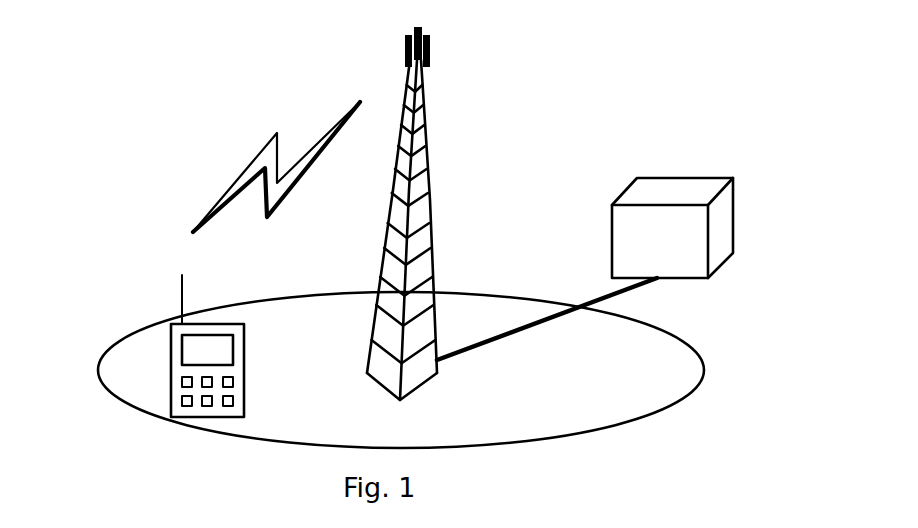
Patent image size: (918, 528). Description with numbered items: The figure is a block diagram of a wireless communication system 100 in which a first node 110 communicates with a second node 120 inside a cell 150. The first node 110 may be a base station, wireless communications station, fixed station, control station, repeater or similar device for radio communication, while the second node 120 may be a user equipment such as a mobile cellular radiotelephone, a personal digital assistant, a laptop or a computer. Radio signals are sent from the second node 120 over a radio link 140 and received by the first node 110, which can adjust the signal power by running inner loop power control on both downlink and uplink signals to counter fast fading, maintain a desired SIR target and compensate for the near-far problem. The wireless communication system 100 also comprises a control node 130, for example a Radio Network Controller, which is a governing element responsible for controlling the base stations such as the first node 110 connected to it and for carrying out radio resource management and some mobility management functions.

The wireless communication system 100 is at (572, 76).
The first node 110 is at (427, 153).
The second node 120 is at (170, 365).
The control node 130 is at (675, 242).
The radio link 140 is at (247, 165).
The cell 150 is at (657, 367).